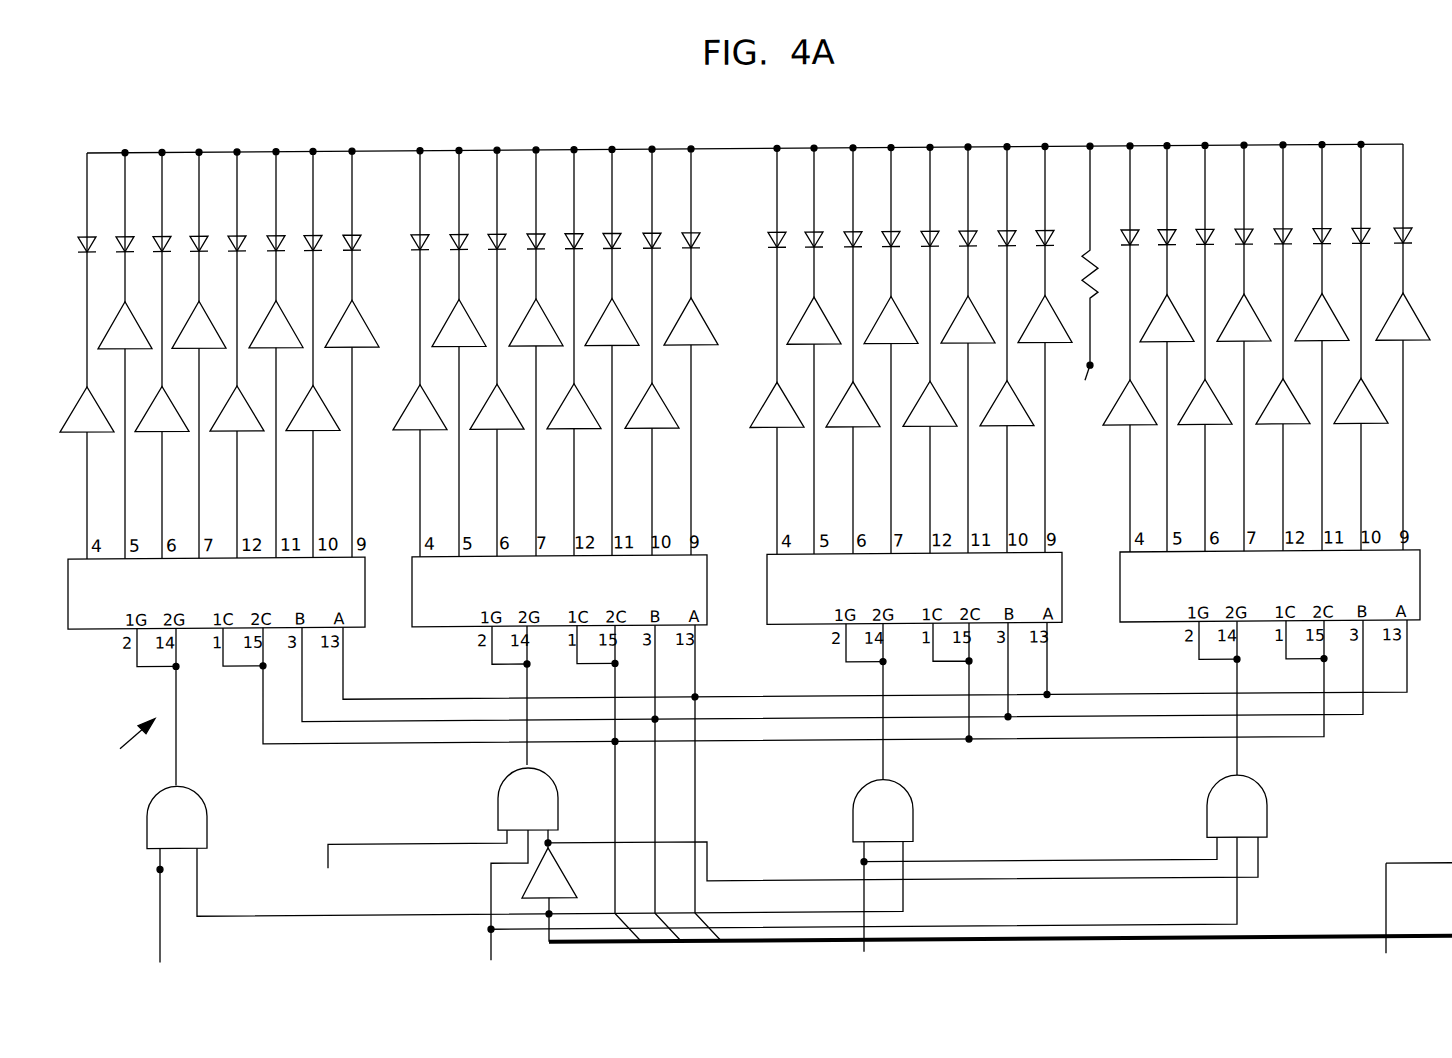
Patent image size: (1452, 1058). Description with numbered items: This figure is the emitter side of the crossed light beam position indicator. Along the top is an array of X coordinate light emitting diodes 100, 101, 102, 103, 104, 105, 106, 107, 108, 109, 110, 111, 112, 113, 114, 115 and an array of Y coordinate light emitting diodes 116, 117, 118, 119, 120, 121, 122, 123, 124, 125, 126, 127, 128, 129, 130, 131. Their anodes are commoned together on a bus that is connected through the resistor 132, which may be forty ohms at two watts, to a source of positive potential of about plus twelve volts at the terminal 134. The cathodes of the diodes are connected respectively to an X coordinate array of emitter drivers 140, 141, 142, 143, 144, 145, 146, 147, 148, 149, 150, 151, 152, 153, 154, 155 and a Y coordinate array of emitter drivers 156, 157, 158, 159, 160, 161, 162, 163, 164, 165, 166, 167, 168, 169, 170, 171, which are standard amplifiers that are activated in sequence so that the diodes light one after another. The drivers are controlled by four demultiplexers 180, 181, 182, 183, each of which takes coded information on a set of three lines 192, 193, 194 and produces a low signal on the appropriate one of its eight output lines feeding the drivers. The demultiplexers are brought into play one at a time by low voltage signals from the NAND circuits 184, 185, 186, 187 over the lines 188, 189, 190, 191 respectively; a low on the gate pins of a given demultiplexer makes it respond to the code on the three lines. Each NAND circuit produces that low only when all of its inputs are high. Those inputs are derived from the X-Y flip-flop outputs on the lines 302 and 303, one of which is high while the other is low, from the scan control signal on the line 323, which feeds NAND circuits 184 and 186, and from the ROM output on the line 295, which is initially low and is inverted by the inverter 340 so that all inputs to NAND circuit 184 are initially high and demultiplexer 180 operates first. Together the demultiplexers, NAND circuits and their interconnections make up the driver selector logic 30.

The driver selector logic 30 is at (117, 743).
The X coordinate light emitting diode 100 is at (691, 237).
The X coordinate light emitting diode 101 is at (652, 237).
The X coordinate light emitting diode 102 is at (612, 237).
The X coordinate light emitting diode 103 is at (574, 237).
The X coordinate light emitting diode 104 is at (536, 237).
The X coordinate light emitting diode 105 is at (497, 237).
The X coordinate light emitting diode 106 is at (459, 237).
The X coordinate light emitting diode 107 is at (420, 237).
The X coordinate light emitting diode 108 is at (352, 237).
The X coordinate light emitting diode 109 is at (313, 237).
The X coordinate light emitting diode 110 is at (276, 237).
The X coordinate light emitting diode 111 is at (237, 237).
The X coordinate light emitting diode 112 is at (199, 237).
The X coordinate light emitting diode 113 is at (162, 237).
The X coordinate light emitting diode 114 is at (125, 237).
The X coordinate light emitting diode 115 is at (87, 237).
The Y coordinate light emitting diode 116 is at (1403, 237).
The Y coordinate light emitting diode 117 is at (1361, 237).
The Y coordinate light emitting diode 118 is at (1322, 237).
The Y coordinate light emitting diode 119 is at (1283, 237).
The Y coordinate light emitting diode 120 is at (1244, 237).
The Y coordinate light emitting diode 121 is at (1205, 237).
The Y coordinate light emitting diode 122 is at (1167, 237).
The Y coordinate light emitting diode 123 is at (1130, 237).
The Y coordinate light emitting diode 124 is at (1045, 237).
The Y coordinate light emitting diode 125 is at (1007, 237).
The Y coordinate light emitting diode 126 is at (968, 237).
The Y coordinate light emitting diode 127 is at (930, 237).
The Y coordinate light emitting diode 128 is at (891, 237).
The Y coordinate light emitting diode 129 is at (853, 237).
The Y coordinate light emitting diode 130 is at (814, 237).
The Y coordinate light emitting diode 131 is at (777, 237).
The resistor 132 is at (1090, 257).
The terminal 134 is at (1085, 389).
The emitter driver 140 is at (711, 324).
The emitter driver 141 is at (678, 412).
The emitter driver 142 is at (626, 314).
The emitter driver 143 is at (597, 408).
The emitter driver 144 is at (548, 312).
The emitter driver 145 is at (520, 435).
The emitter driver 146 is at (471, 314).
The emitter driver 147 is at (430, 435).
The emitter driver 148 is at (345, 305).
The emitter driver 149 is at (330, 435).
The emitter driver 150 is at (292, 314).
The emitter driver 151 is at (260, 435).
The emitter driver 152 is at (211, 314).
The emitter driver 153 is at (182, 435).
The emitter driver 154 is at (137, 314).
The emitter driver 155 is at (97, 437).
The emitter driver 156 is at (1391, 314).
The emitter driver 157 is at (1350, 435).
The emitter driver 158 is at (1310, 314).
The emitter driver 159 is at (1270, 435).
The emitter driver 160 is at (1233, 314).
The emitter driver 161 is at (1192, 435).
The emitter driver 162 is at (1156, 314).
The emitter driver 163 is at (1120, 435).
The emitter driver 164 is at (1033, 314).
The emitter driver 165 is at (1022, 435).
The emitter driver 166 is at (956, 314).
The emitter driver 167 is at (918, 435).
The emitter driver 168 is at (879, 314).
The emitter driver 169 is at (840, 435).
The emitter driver 170 is at (801, 305).
The emitter driver 171 is at (769, 433).
The demultiplexer 180 is at (440, 630).
The demultiplexer 181 is at (360, 630).
The demultiplexer 182 is at (1148, 630).
The demultiplexer 183 is at (792, 630).
The NAND circuit 184 is at (556, 794).
The NAND circuit 185 is at (147, 829).
The NAND circuit 186 is at (1207, 823).
The NAND circuit 187 is at (914, 823).
The line 188 is at (527, 757).
The line 189 is at (177, 751).
The line 190 is at (1237, 767).
The line 191 is at (886, 763).
The line 192 is at (697, 775).
The line 193 is at (657, 806).
The line 194 is at (617, 836).
The line 295 is at (583, 942).
The line 302 is at (162, 937).
The line 303 is at (866, 922).
The line 323 is at (490, 945).
The inverter 340 is at (530, 884).